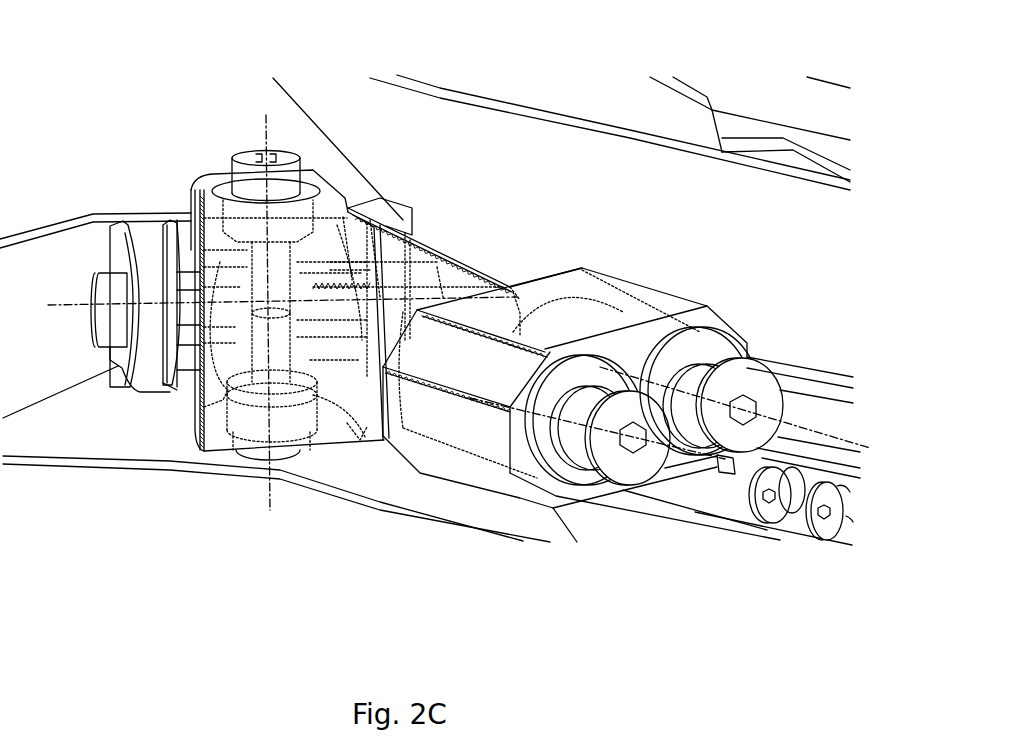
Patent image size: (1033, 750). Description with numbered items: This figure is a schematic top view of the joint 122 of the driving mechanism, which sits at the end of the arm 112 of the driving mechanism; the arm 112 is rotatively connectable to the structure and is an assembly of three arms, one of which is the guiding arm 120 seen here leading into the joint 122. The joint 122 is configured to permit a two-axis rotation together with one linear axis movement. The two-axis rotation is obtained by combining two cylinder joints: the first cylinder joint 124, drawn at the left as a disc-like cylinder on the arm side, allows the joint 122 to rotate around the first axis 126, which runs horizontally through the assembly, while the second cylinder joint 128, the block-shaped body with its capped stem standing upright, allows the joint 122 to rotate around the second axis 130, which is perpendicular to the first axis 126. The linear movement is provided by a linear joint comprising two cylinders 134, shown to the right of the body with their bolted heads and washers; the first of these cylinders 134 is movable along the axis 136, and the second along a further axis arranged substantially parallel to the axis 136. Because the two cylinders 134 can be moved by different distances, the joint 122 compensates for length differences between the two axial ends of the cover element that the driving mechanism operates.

The arm 112 is at (95, 237).
The guiding arm 120 is at (63, 257).
The joint 122 is at (370, 480).
The first cylinder joint 124 is at (120, 362).
The first axis 126 is at (148, 305).
The second cylinder joint 128 is at (326, 193).
The second axis 130 is at (270, 130).
The cylinders 134 is at (637, 347).
The axis 136 is at (830, 433).